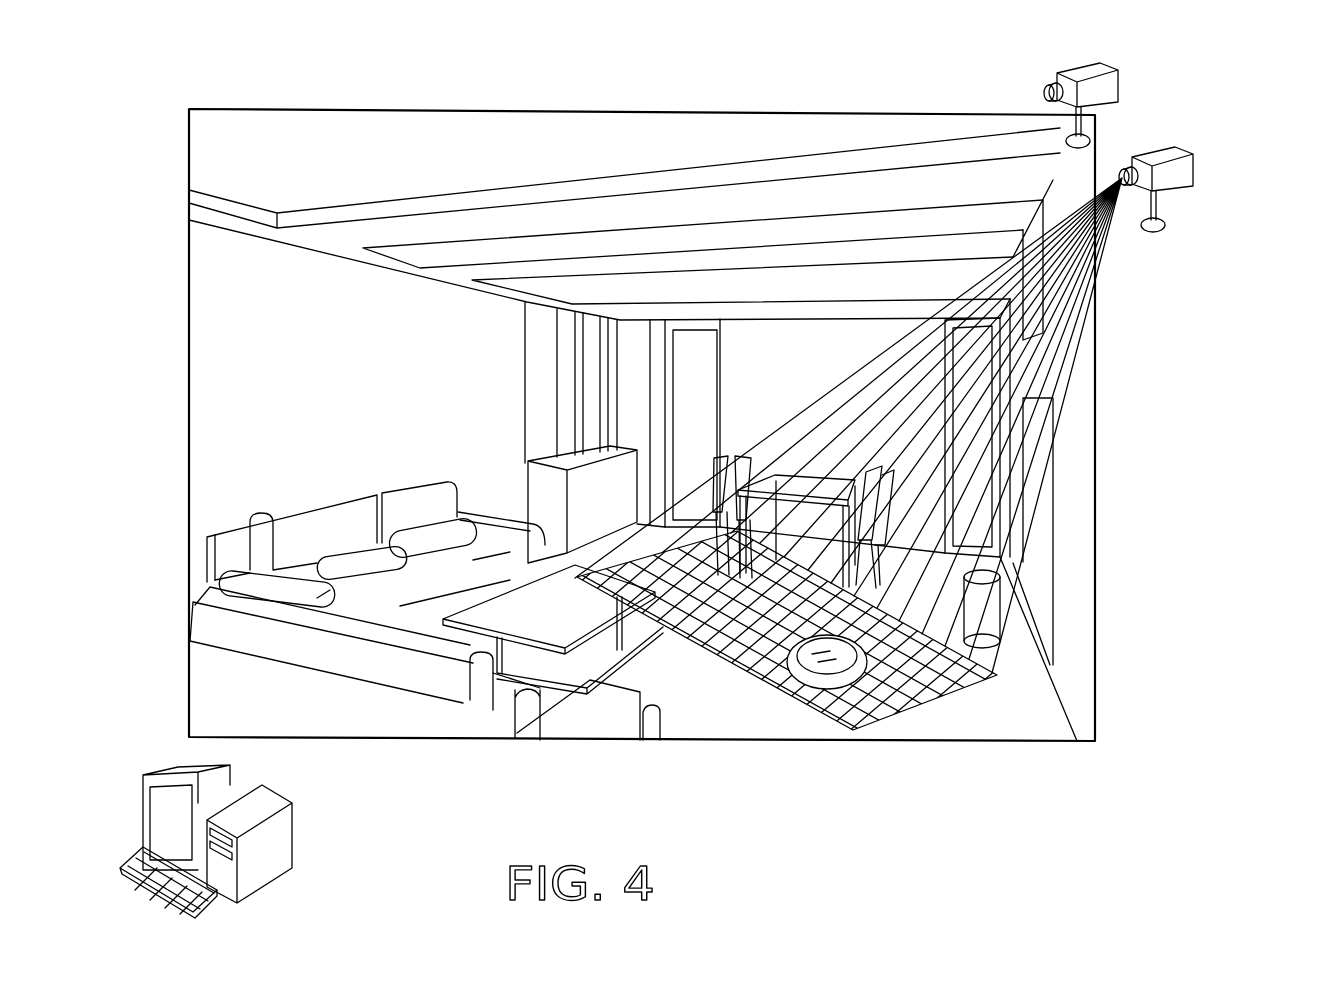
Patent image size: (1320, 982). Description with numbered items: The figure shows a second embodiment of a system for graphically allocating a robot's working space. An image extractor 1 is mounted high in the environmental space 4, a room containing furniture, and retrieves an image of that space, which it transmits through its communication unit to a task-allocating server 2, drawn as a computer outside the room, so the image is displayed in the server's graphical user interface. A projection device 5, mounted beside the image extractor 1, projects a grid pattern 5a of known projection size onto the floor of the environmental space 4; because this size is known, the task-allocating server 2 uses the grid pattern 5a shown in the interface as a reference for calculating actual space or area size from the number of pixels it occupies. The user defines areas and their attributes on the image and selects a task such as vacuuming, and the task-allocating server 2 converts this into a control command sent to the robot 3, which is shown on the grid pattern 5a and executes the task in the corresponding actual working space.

The image extractor 1 is at (1110, 88).
The task-allocating server 2 is at (288, 840).
The robot 3 is at (778, 688).
The environmental space 4 is at (385, 128).
The projection device 5 is at (1187, 165).
The grid pattern 5a is at (930, 703).